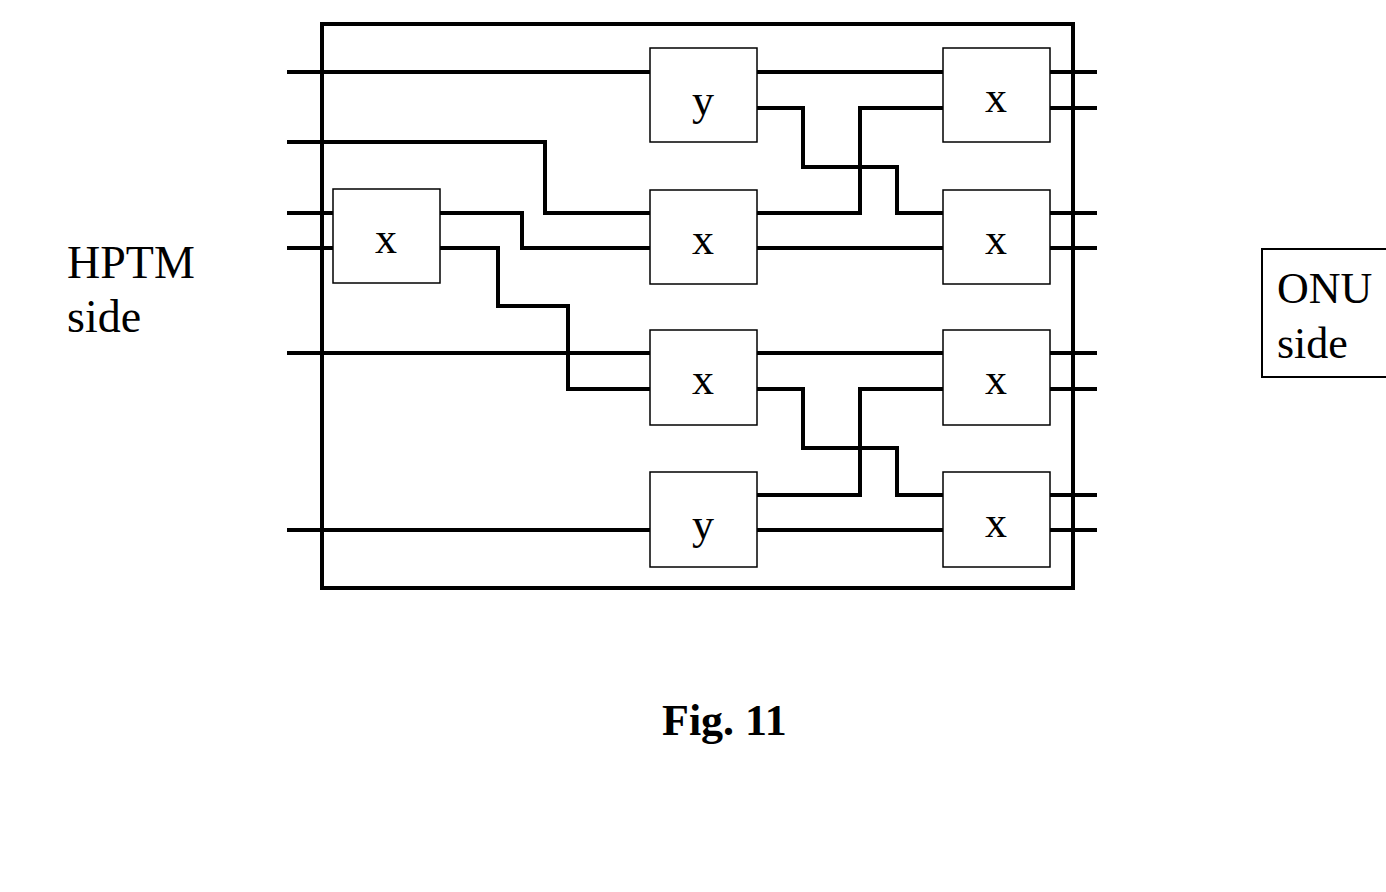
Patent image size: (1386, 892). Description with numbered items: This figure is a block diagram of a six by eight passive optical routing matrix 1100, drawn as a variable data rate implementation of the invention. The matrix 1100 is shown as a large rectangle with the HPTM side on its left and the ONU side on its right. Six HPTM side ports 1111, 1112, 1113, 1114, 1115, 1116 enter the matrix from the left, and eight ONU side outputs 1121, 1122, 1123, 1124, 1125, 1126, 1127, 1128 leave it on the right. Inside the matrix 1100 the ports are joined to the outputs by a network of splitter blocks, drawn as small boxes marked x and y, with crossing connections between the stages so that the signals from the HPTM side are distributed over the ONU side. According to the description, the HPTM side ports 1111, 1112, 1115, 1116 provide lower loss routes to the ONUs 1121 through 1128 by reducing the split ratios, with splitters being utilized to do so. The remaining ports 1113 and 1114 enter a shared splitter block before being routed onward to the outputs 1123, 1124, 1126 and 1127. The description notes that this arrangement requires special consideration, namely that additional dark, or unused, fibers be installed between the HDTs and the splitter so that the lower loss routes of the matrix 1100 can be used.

The optical switching/coupling network 1100 is at (336, 635).
The HPTM side port 1111 is at (454, 60).
The HPTM side port 1112 is at (456, 166).
The HPTM side input port 1113 is at (294, 199).
The HPTM side input port 1114 is at (291, 238).
The HPTM side port 1115 is at (456, 341).
The HPTM side port 1116 is at (453, 517).
The ONU 1121 is at (1090, 67).
The ONU 1122 is at (1091, 109).
The ONU 1123 is at (1095, 209).
The ONU 1124 is at (1097, 251).
The ONU 1125 is at (1095, 357).
The ONU 1126 is at (1093, 397).
The ONU 1127 is at (1096, 496).
The ONU 1128 is at (1095, 540).